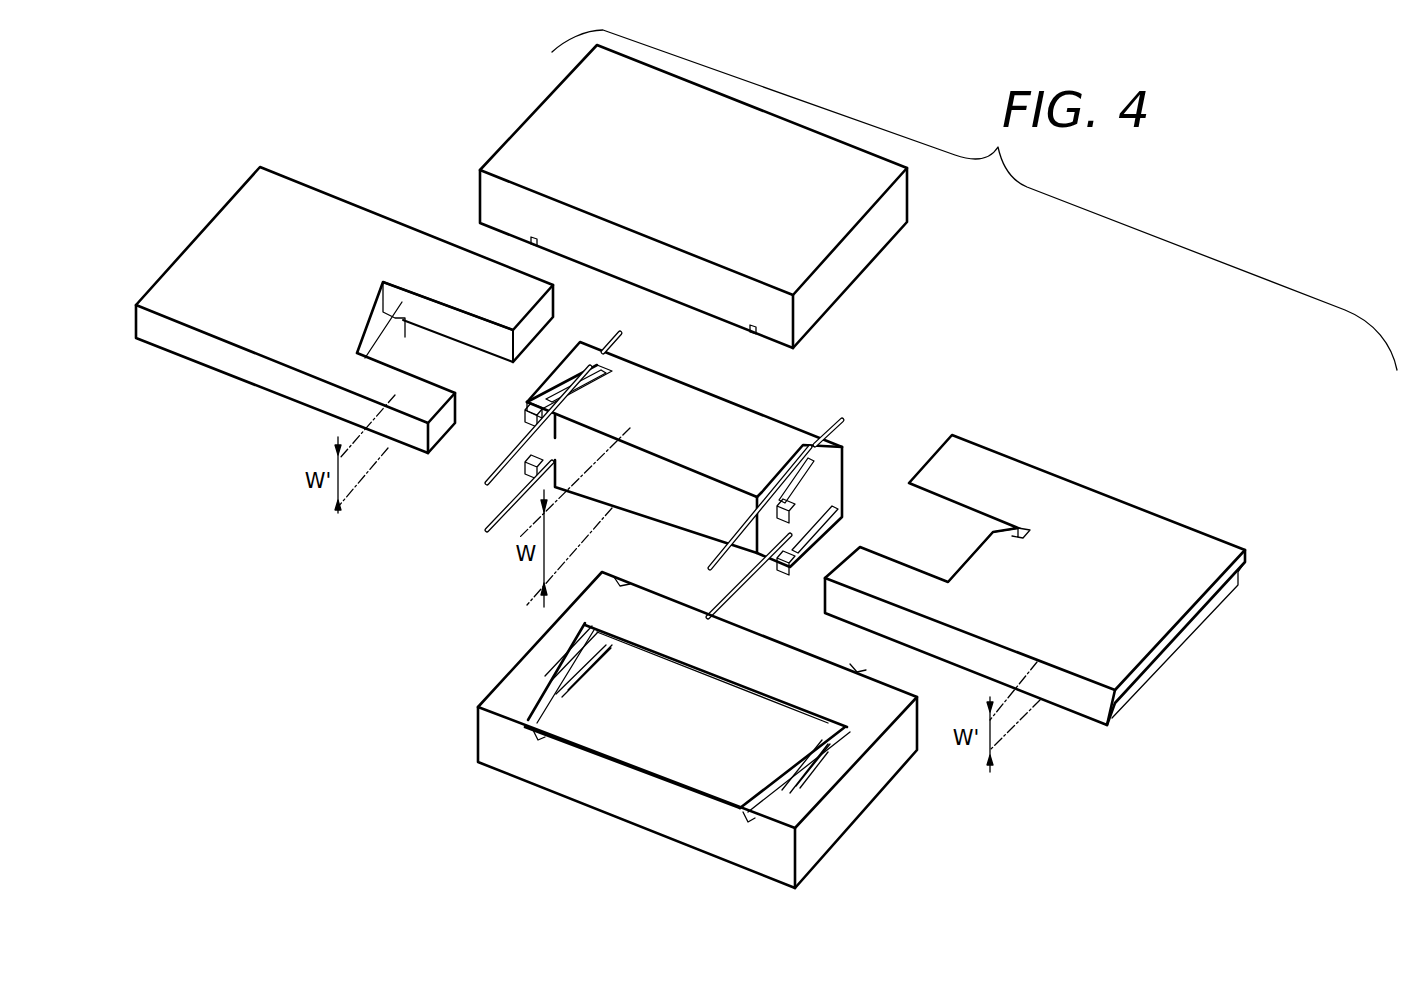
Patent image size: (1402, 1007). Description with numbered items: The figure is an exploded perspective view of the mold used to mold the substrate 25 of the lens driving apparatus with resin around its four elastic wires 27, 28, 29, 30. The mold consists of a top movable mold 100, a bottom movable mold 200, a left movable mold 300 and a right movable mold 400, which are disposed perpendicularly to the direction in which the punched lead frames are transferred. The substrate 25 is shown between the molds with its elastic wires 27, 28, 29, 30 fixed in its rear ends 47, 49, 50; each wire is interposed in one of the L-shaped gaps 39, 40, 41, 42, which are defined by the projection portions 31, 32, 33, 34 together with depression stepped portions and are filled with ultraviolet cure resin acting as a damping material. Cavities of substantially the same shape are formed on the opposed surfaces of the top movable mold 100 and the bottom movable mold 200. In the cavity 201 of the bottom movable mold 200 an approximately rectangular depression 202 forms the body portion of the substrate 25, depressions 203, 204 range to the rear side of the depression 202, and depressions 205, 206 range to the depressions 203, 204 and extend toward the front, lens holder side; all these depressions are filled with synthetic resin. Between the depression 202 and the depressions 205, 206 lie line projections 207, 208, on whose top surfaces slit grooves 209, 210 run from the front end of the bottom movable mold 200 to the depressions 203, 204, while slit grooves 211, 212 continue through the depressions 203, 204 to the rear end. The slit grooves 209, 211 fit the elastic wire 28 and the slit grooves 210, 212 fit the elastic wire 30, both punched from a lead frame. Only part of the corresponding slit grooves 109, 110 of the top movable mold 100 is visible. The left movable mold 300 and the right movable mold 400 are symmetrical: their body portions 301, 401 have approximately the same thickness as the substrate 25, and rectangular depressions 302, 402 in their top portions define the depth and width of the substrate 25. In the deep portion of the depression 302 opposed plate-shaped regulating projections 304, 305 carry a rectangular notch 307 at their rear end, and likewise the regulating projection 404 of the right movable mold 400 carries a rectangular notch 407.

The top movable mold 100 is at (898, 229).
The slit groove 109 is at (535, 244).
The slit groove 110 is at (752, 333).
The left movable mold 300 is at (344, 310).
The body portion 301 is at (235, 332).
The regulating projection 304 is at (383, 282).
The regulating projection 305 is at (405, 320).
The rectangular notch 307 is at (405, 298).
The substrate 25 is at (740, 406).
The elastic wire 27 is at (487, 482).
The elastic wire 28 is at (492, 530).
The elastic wire 29 is at (735, 540).
The elastic wire 30 is at (740, 600).
The projection portion 31 is at (545, 395).
The projection portion 32 is at (522, 485).
The projection portion 33 is at (797, 458).
The projection portion 34 is at (790, 572).
The L-shaped gap 39 is at (578, 362).
The L-shaped gap 40 is at (530, 505).
The L-shaped gap 41 is at (760, 492).
The L-shaped gap 42 is at (715, 566).
The rear end 47 is at (620, 343).
The rear end 49 is at (818, 438).
The rear end 50 is at (838, 505).
The rectangular depression 302 is at (523, 410).
The right movable mold 400 is at (1035, 568).
The body portion 401 is at (1098, 495).
The rectangular depression 402 is at (905, 547).
The regulating projection 404 is at (990, 528).
The rectangular notch 407 is at (1022, 525).
The bottom movable mold 200 is at (697, 713).
The cavity 201 is at (665, 722).
The rectangular depression 202 is at (705, 698).
The depression 203 is at (555, 625).
The depression 204 is at (833, 712).
The depression 205 is at (543, 673).
The depression 206 is at (805, 778).
The line projection 207 is at (560, 648).
The line projection 208 is at (820, 760).
The slit groove 209 is at (590, 683).
The slit groove 210 is at (786, 758).
The slit groove 211 is at (622, 586).
The slit groove 212 is at (857, 670).